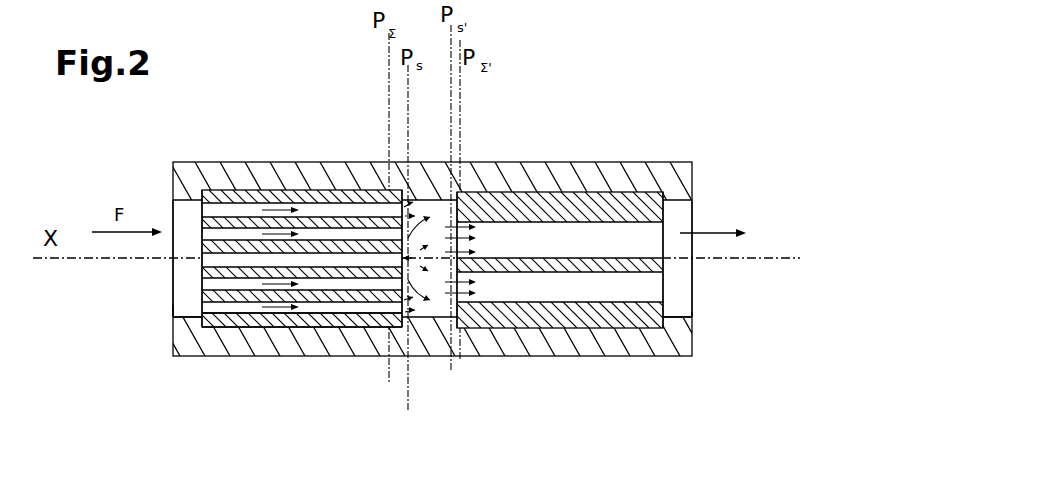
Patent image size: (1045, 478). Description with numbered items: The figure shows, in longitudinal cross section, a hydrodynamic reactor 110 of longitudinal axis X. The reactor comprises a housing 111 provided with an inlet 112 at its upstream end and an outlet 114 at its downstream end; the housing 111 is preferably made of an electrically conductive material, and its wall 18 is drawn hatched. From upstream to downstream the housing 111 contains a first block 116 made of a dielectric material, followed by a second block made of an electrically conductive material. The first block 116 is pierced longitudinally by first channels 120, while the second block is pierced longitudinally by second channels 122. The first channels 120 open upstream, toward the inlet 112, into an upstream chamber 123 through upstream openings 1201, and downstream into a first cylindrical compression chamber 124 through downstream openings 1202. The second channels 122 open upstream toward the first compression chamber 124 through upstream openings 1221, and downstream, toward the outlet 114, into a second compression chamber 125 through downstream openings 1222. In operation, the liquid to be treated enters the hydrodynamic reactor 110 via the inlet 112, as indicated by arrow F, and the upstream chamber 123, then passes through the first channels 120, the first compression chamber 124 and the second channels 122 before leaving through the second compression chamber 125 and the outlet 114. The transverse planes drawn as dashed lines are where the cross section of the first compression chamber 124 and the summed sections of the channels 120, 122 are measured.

The hydrodynamic reactor 110 is at (613, 117).
The housing 111 is at (290, 168).
The housing wall 18 is at (505, 318).
The inlet 112 is at (172, 277).
The outlet 114 is at (685, 282).
The upstream chamber 123 is at (173, 305).
The second compression chamber 125 is at (685, 312).
The first channels 120 is at (320, 308).
The upstream openings of the first channels 1201 is at (232, 316).
The downstream openings of the first channels 1202 is at (393, 306).
The first block 116 is at (248, 320).
The second channels 122 is at (592, 288).
The upstream openings of the second channels 1221 is at (457, 297).
The downstream openings of the second channels 1222 is at (663, 288).
The first cylindrical compression chamber 124 is at (442, 265).